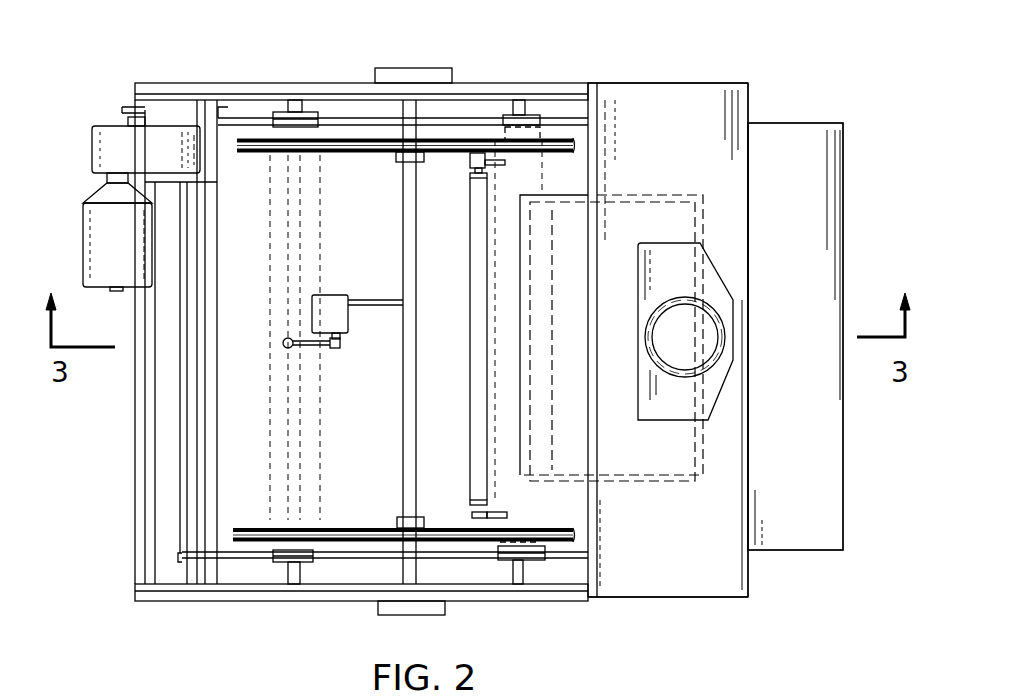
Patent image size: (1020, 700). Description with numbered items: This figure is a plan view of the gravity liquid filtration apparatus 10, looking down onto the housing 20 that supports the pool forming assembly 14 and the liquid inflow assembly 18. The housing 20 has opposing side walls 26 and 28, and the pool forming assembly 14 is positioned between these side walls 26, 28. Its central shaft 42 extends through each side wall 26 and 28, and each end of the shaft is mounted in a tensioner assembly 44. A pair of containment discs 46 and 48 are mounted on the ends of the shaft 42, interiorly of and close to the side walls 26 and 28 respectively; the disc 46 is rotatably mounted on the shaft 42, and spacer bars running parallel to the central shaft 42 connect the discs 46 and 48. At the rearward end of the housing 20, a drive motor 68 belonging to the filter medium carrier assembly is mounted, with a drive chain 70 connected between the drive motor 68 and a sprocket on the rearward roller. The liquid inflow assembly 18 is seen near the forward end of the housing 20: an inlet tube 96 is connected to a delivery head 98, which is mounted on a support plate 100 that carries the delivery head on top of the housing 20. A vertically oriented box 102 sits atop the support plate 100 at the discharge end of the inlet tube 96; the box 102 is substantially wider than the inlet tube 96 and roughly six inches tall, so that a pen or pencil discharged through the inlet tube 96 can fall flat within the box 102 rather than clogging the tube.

The gravity liquid filtration apparatus 10 is at (828, 97).
The pool forming assembly 14 is at (368, 555).
The liquid inflow assembly 18 is at (760, 318).
The housing 20 is at (330, 80).
The side wall 26 is at (538, 82).
The side wall 28 is at (525, 592).
The central shaft 42 is at (403, 440).
The tensioner assembly 44 is at (431, 58).
The containment disc 46 is at (356, 153).
The containment disc 48 is at (343, 525).
The drive motor 68 is at (104, 253).
The drive chain 70 is at (165, 108).
The inlet tube 96 is at (722, 300).
The delivery head 98 is at (780, 86).
The support plate 100 is at (740, 568).
The vertically oriented box 102 is at (705, 272).